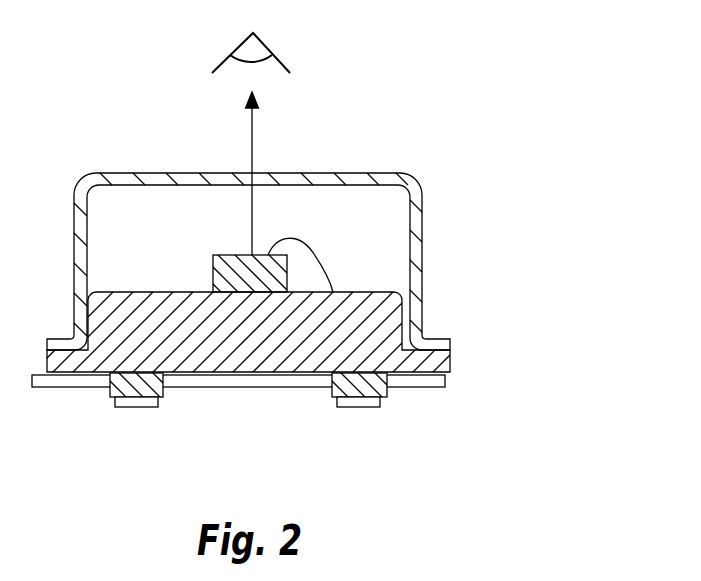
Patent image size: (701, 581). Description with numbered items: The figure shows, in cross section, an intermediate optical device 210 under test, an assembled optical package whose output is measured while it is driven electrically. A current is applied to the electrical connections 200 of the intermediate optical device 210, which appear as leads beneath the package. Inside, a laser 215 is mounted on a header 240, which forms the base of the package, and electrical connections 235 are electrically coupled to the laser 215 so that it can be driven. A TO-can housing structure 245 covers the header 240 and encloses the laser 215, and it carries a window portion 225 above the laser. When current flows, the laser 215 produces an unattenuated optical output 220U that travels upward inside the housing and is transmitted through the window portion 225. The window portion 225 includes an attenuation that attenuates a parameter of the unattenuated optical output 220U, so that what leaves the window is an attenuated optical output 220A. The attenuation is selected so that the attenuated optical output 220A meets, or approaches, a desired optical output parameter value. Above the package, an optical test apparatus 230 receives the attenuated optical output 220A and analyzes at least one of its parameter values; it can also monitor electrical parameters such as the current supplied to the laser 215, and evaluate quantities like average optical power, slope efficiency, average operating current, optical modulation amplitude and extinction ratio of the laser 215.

The electrical connections 200 is at (137, 412).
The intermediate optical device 210 is at (289, 292).
The laser 215 is at (213, 270).
The attenuated optical output 220A is at (252, 127).
The unattenuated optical output 220U is at (252, 222).
The window portion 225 is at (278, 173).
The optical test apparatus 230 is at (262, 45).
The electrical connections 235 is at (328, 257).
The header 240 is at (263, 347).
The TO-can housing structure 245 is at (422, 223).